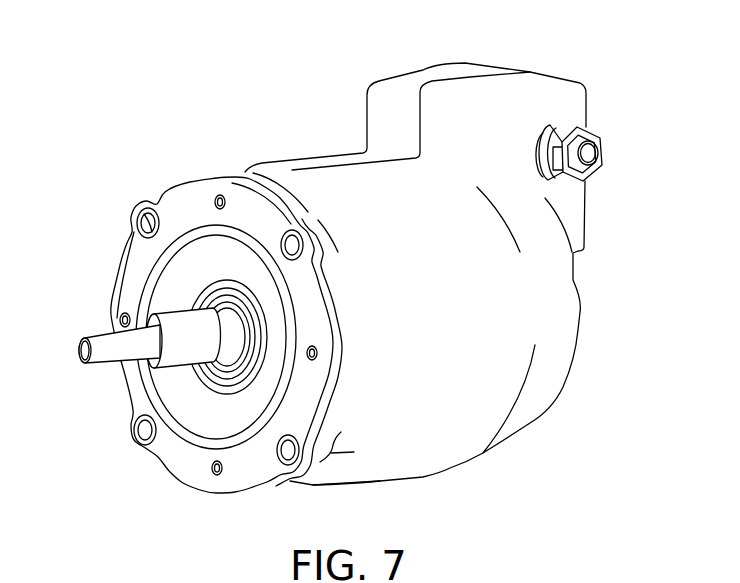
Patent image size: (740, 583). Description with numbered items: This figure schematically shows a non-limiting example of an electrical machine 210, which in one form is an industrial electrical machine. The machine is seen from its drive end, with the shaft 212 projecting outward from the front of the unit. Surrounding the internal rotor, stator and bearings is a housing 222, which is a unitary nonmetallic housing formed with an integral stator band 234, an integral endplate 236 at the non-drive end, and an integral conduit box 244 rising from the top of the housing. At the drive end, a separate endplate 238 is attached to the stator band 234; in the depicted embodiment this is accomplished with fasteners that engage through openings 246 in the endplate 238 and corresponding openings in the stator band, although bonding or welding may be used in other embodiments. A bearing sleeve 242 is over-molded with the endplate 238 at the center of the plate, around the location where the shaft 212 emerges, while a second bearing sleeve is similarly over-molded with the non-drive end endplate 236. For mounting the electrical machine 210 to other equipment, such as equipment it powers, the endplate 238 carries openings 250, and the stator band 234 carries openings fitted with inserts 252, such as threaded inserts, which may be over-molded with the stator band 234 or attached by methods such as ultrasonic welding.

The electrical machine 210 is at (596, 39).
The shaft 212 is at (107, 363).
The housing 222 is at (438, 279).
The stator band 234 is at (427, 478).
The endplate 236 is at (550, 410).
The endplate 238 is at (193, 324).
The bearing sleeve 242 is at (194, 300).
The conduit box 244 is at (530, 72).
The openings 246 is at (112, 318).
The openings 250 is at (132, 437).
The inserts 252 is at (140, 211).